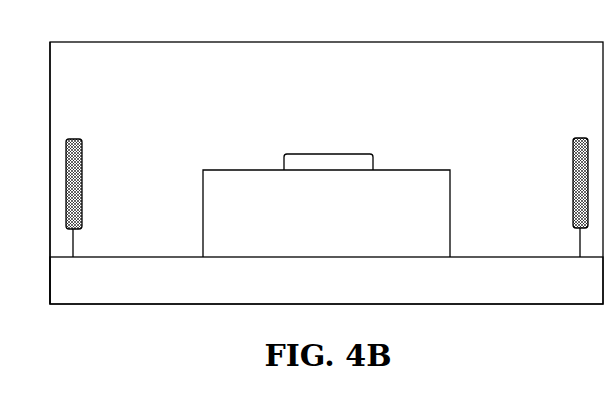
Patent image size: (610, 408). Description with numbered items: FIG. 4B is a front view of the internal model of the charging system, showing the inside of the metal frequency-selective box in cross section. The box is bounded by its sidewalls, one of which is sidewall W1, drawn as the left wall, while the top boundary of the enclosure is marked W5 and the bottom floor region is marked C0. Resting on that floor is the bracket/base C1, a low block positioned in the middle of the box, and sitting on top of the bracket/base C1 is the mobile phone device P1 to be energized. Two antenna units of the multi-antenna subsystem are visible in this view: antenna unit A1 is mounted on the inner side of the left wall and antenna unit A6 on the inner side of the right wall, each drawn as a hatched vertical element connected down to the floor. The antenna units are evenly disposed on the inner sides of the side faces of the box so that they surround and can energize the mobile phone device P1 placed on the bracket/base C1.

The wafer / substrate W5 is at (326, 160).
The sidewall of the box W1 is at (31, 173).
The base layer C0 is at (326, 280).
The bracket/base C1 is at (326, 213).
The mobile phone device P1 is at (328, 150).
The antenna unit A1 is at (74, 186).
The antenna unit A6 is at (580, 186).